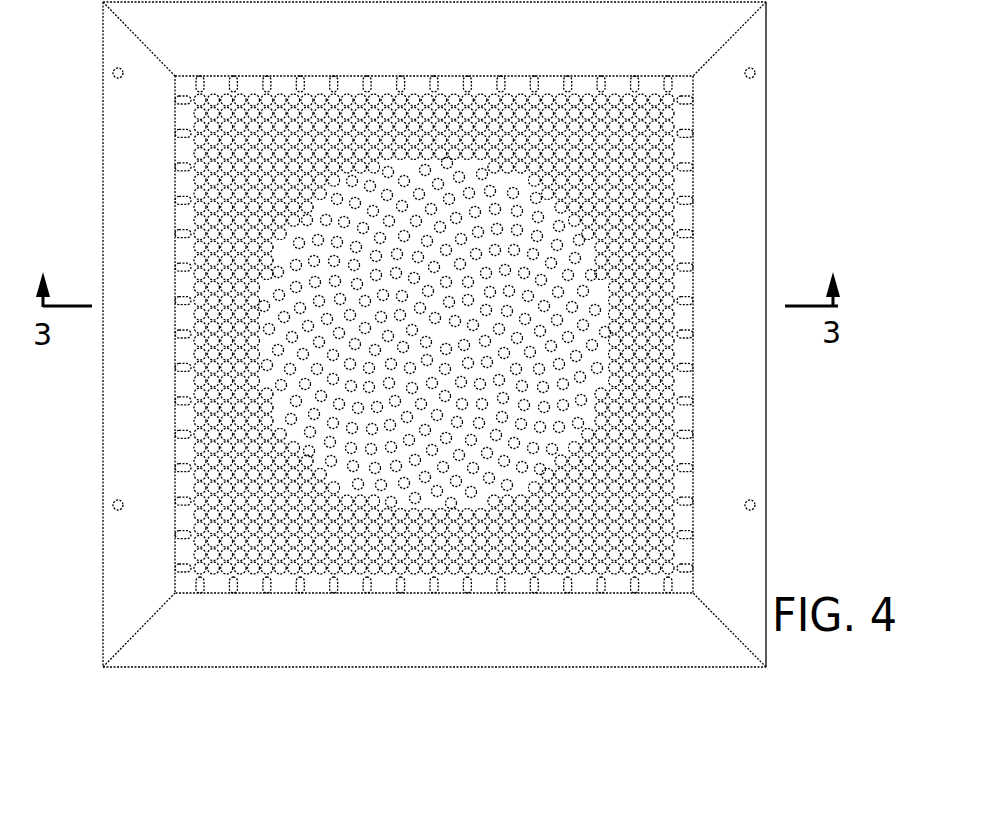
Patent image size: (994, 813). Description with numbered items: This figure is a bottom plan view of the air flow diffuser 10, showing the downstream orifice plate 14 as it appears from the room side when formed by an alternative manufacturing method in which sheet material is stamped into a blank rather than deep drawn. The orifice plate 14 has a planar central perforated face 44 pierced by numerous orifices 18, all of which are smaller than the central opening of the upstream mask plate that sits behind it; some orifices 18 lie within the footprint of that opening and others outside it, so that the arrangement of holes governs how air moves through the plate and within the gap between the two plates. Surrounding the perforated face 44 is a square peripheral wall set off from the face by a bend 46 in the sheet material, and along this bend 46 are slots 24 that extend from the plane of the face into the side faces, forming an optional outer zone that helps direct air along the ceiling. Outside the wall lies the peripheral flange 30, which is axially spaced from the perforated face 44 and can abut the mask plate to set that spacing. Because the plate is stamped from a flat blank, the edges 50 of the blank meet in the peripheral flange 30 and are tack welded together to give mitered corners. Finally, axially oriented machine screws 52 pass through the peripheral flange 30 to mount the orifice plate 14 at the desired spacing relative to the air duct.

The air flow diffuser 10 is at (456, 334).
The orifice plate 14 is at (782, 113).
The orifices 18 is at (328, 280).
The slots 24 is at (180, 334).
The peripheral flange 30 is at (745, 200).
The perforated face 44 is at (485, 266).
The bend 46 is at (690, 250).
The edges of the blank 50 is at (733, 37).
The machine screws 52 is at (113, 68).